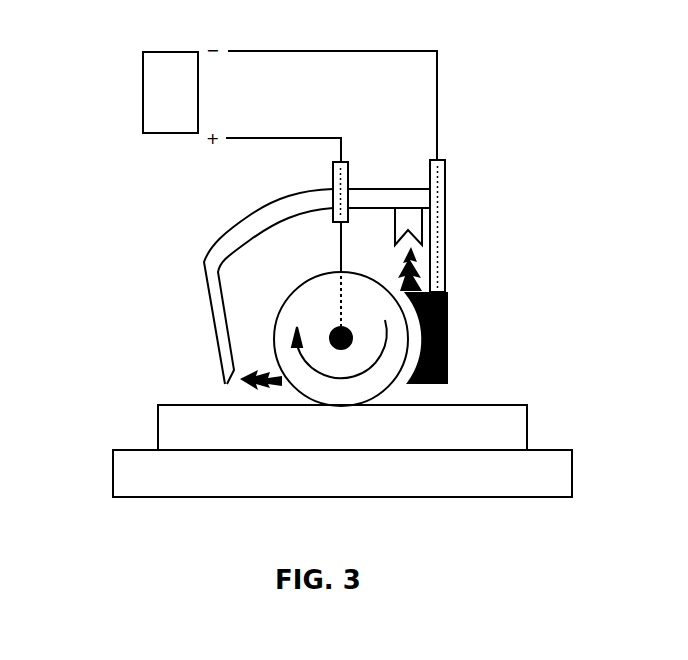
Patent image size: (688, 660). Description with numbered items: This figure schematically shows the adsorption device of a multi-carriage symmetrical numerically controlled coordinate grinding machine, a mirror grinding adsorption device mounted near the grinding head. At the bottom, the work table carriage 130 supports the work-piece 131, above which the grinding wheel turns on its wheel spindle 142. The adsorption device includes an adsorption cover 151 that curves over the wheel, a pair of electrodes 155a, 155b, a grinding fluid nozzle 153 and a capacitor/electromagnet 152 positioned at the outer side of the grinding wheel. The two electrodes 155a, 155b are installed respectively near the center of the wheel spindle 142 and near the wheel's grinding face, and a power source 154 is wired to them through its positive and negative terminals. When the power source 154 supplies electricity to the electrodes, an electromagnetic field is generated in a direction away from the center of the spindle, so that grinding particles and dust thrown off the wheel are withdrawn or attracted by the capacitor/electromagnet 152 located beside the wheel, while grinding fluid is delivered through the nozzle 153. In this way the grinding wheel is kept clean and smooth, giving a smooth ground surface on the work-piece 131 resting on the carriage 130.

The first carriage 130 is at (128, 485).
The work-piece 131 is at (173, 430).
The wheel spindle 142 is at (338, 345).
The adsorption cover 151 is at (204, 268).
The capacitor/electromagnet 152 is at (447, 342).
The grinding fluid nozzle 153 is at (408, 220).
The power source 154 is at (143, 132).
The electrode 155a is at (445, 260).
The electrode 155b is at (333, 173).